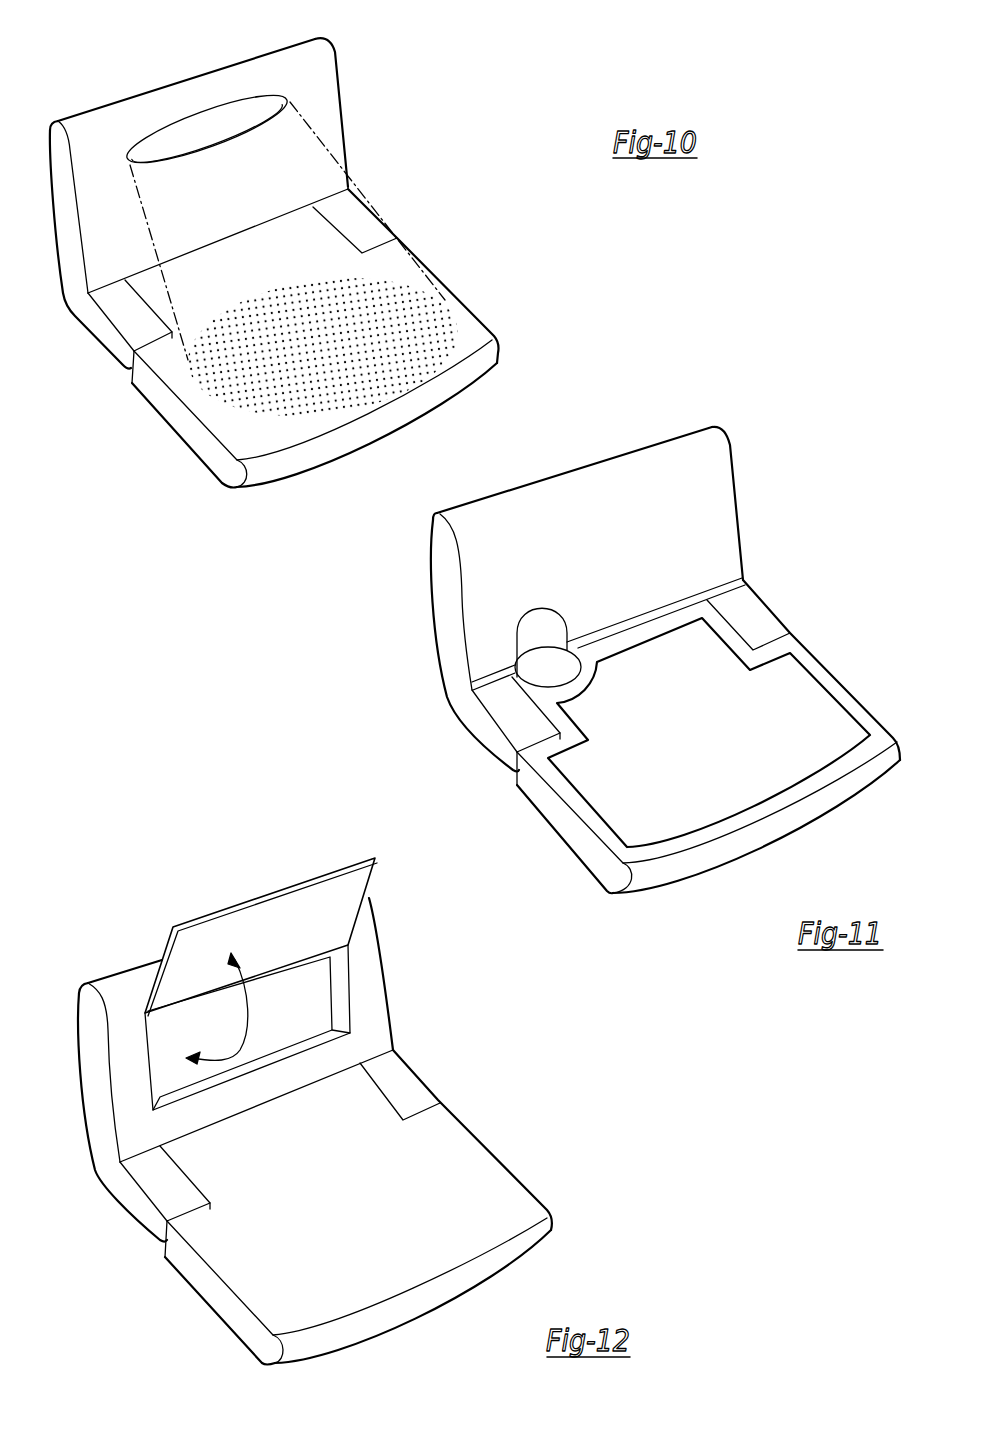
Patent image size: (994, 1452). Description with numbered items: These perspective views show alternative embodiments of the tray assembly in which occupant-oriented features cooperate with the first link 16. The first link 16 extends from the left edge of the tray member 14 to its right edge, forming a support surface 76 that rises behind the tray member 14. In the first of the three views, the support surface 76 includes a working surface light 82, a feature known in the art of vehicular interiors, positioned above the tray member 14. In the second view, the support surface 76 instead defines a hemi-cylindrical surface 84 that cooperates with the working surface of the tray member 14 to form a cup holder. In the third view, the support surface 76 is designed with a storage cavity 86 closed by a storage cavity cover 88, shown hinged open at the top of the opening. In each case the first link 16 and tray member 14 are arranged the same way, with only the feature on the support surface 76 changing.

In FIG. 10, the tray member 14 is at (453, 288).
In FIG. 11, the tray member 14 is at (828, 673).
In FIG. 12, the tray member 14 is at (472, 1150).
In FIG. 10, the first link 16 is at (342, 115).
In FIG. 11, the first link 16 is at (728, 508).
In FIG. 12, the first link 16 is at (377, 1005).
In FIG. 10, the support surface 76 is at (215, 71).
In FIG. 11, the support surface 76 is at (642, 453).
In FIG. 12, the support surface 76 is at (125, 982).
In FIG. 10, the working surface light 82 is at (288, 103).
In FIG. 11, the hemi-cylindrical surface 84 is at (537, 628).
In FIG. 12, the storage cavity 86 is at (213, 1013).
In FIG. 12, the storage cavity cover 88 is at (337, 895).